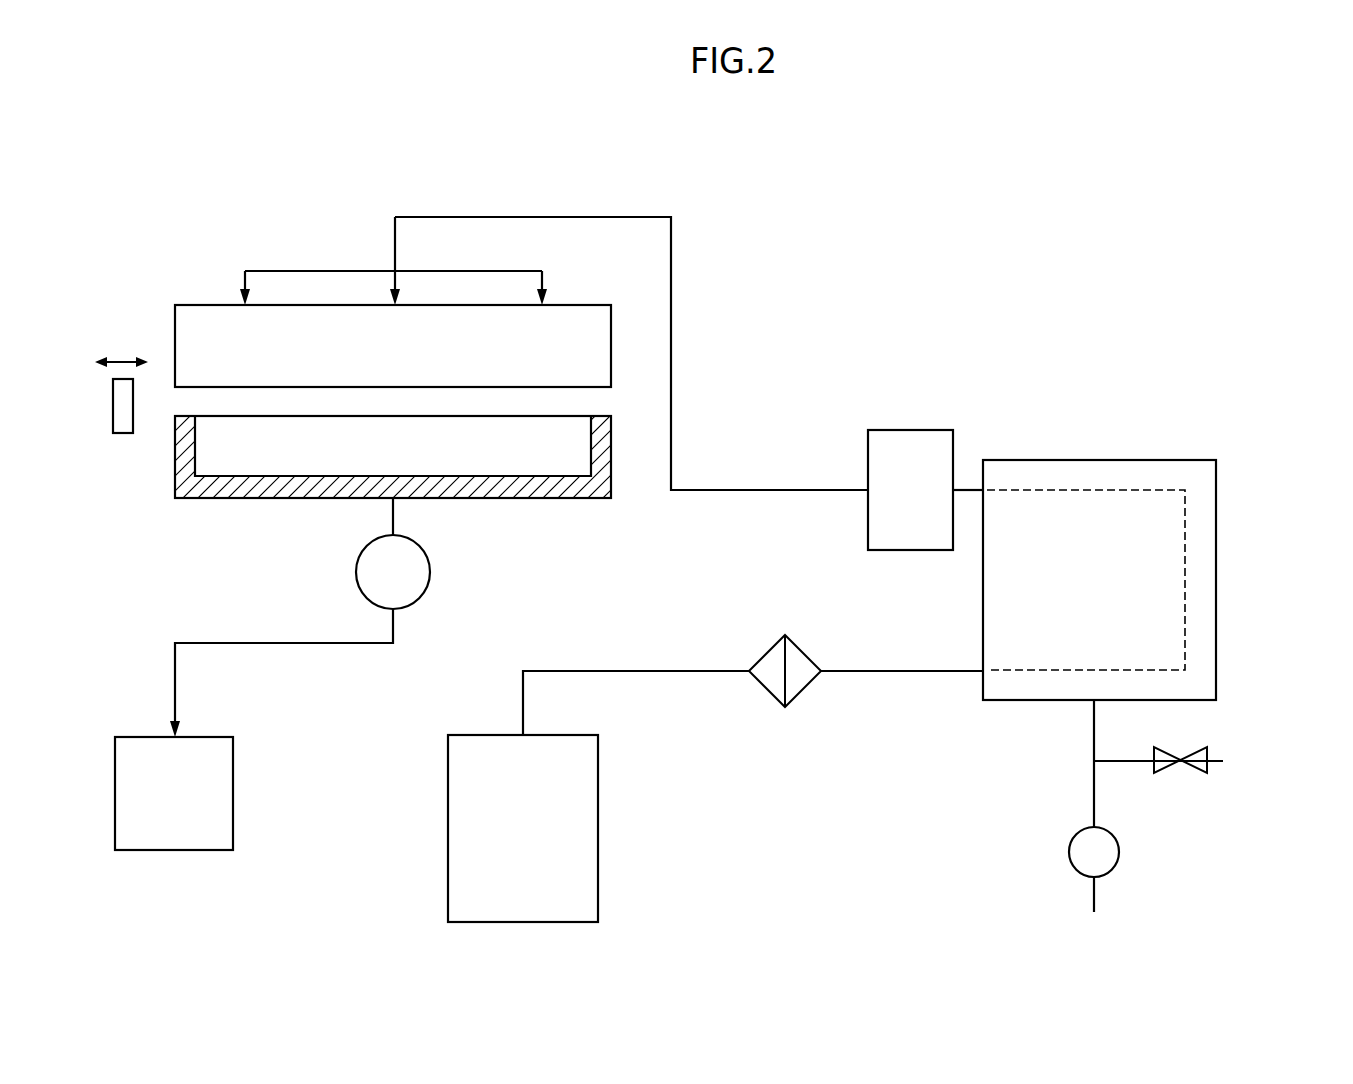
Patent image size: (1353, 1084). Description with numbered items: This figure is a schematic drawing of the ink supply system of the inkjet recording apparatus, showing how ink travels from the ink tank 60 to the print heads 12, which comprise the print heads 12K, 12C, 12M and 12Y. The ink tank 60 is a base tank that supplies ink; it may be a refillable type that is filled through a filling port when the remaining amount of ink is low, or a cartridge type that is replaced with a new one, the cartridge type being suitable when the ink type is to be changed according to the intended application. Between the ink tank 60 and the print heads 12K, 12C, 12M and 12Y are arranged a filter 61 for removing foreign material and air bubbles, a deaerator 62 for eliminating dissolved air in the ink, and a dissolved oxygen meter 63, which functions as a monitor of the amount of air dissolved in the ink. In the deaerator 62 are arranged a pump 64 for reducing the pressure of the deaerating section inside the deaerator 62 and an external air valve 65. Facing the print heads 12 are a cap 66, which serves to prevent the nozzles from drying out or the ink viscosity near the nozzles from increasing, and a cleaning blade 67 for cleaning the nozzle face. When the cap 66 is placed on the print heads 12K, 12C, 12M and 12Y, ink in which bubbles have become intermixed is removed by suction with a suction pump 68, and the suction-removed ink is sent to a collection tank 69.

The print heads 12 is at (529, 322).
The print head 12K is at (529, 322).
The print head 12C is at (529, 322).
The print head 12M is at (529, 322).
The print head 12Y is at (582, 315).
The ink tank 60 is at (580, 877).
The filter 61 is at (802, 693).
The deaerator 62 is at (1135, 478).
The dissolved oxygen meter 63 is at (907, 440).
The pump 64 is at (1119, 852).
The external air valve 65 is at (1187, 747).
The cap 66 is at (582, 490).
The cleaning blade 67 is at (120, 427).
The suction pump 68 is at (420, 583).
The collection tank 69 is at (177, 835).